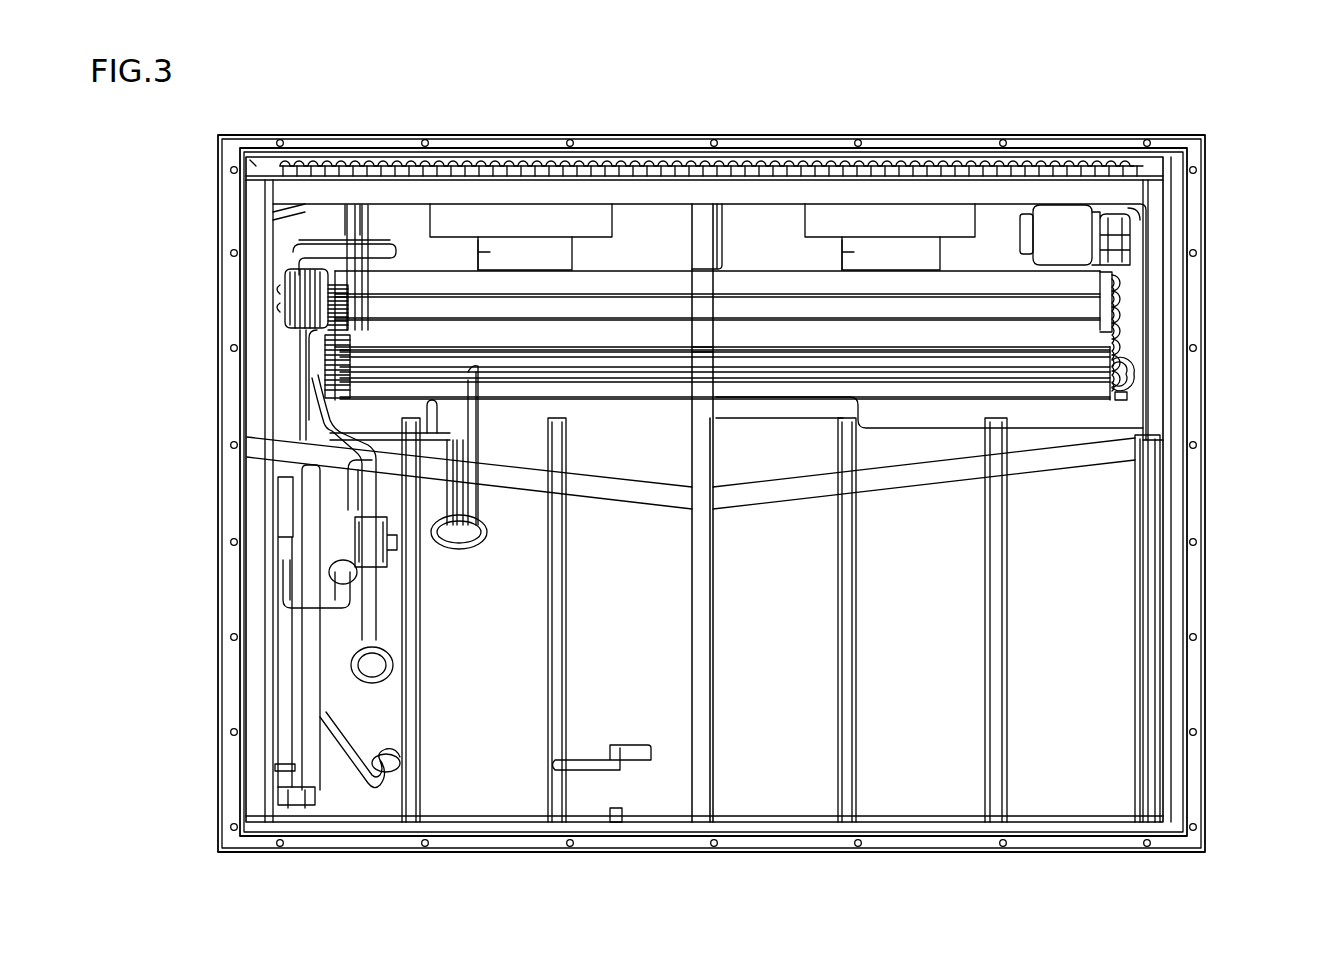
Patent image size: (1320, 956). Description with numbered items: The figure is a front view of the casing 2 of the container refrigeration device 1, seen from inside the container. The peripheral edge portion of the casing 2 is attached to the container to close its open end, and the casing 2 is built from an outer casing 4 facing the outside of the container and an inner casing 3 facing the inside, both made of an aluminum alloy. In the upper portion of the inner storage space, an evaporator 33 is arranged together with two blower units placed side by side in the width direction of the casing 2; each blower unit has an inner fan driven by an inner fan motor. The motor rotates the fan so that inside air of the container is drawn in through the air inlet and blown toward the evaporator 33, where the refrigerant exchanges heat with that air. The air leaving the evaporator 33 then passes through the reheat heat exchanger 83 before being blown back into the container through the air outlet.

The container refrigeration device 1 is at (1242, 181).
The casing 2 is at (218, 170).
The inner casing 3 is at (1100, 598).
The outer casing 4 is at (1182, 138).
The evaporator 33 is at (1085, 311).
The reheat heat exchanger 83 is at (1049, 373).